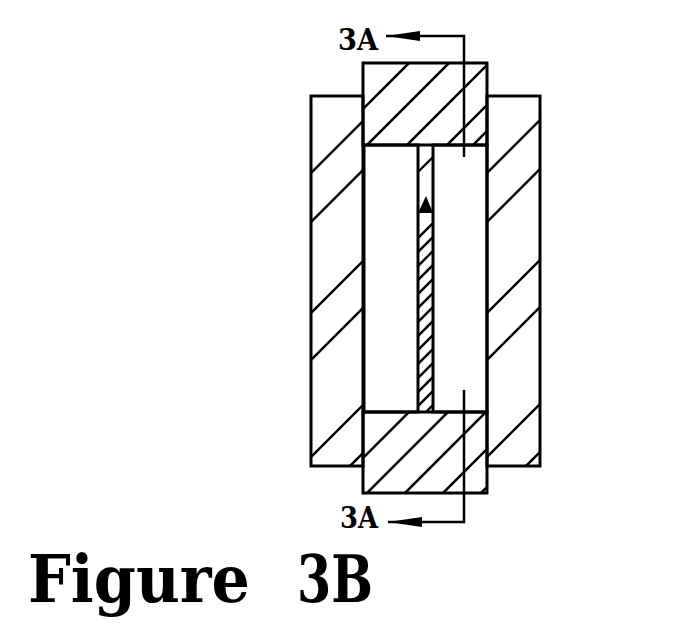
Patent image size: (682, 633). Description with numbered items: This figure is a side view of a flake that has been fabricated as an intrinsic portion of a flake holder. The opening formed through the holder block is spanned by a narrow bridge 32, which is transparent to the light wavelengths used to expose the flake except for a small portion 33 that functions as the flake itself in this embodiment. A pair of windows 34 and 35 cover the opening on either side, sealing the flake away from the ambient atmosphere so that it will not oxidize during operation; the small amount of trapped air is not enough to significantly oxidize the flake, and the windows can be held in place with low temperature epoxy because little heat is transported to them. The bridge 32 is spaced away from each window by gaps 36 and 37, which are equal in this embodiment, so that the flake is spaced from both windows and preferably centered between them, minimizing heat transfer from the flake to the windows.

The bridge 32 is at (428, 333).
The small portion of bridge (flake) 33 is at (418, 284).
The window 34 is at (327, 253).
The window 35 is at (528, 247).
The gap 36 is at (410, 260).
The gap 37 is at (484, 260).